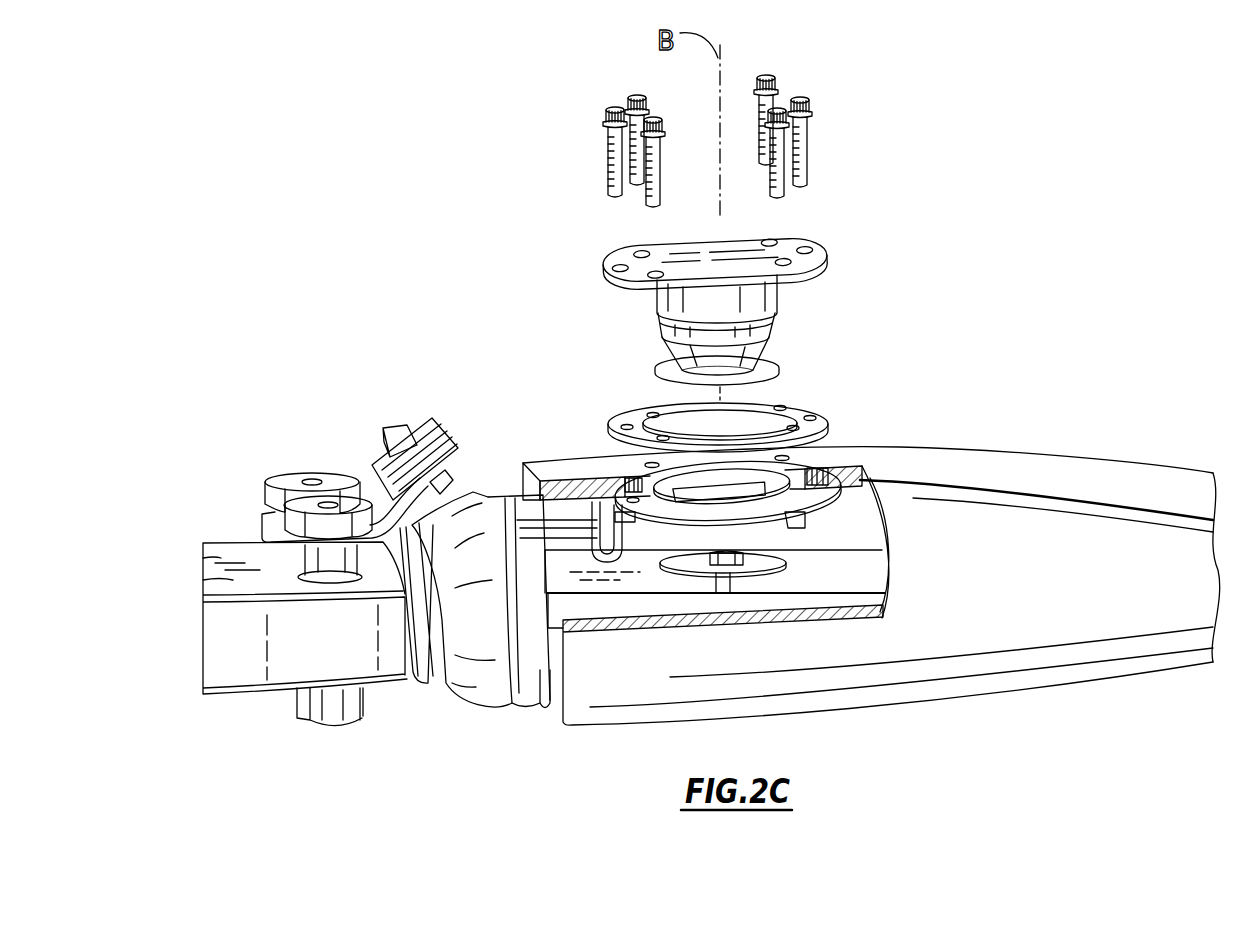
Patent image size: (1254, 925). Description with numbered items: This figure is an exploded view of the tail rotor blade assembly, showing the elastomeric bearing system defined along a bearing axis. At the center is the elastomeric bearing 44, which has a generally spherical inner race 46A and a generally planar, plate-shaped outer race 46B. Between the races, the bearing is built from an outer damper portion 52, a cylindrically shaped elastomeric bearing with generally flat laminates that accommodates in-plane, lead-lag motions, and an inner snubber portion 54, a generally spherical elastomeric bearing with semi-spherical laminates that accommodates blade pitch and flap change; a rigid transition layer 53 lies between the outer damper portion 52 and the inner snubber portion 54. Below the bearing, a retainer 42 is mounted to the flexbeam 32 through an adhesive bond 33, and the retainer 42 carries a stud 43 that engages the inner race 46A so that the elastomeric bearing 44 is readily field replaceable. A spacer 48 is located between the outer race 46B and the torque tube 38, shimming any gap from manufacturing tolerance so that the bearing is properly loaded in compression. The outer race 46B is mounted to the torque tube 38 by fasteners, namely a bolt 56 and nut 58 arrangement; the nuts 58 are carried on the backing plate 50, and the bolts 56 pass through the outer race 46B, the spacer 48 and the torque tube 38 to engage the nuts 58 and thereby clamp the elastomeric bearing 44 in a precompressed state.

The flexbeam 32 is at (642, 579).
The adhesive bond 33 is at (723, 580).
The torque tube 38 is at (570, 517).
The retainer 42 is at (780, 555).
The stud 43 is at (710, 562).
The elastomeric bearing 44 is at (739, 297).
The inner race 46A is at (775, 365).
The outer race 46B is at (787, 257).
The spacer 48 is at (823, 417).
The backing plate 50 is at (866, 500).
The outer damper portion 52 is at (662, 297).
The rigid transition layer 53 is at (668, 324).
The inner snubber portion 54 is at (670, 348).
The bolt 56 is at (834, 144).
The nut 58 is at (842, 502).